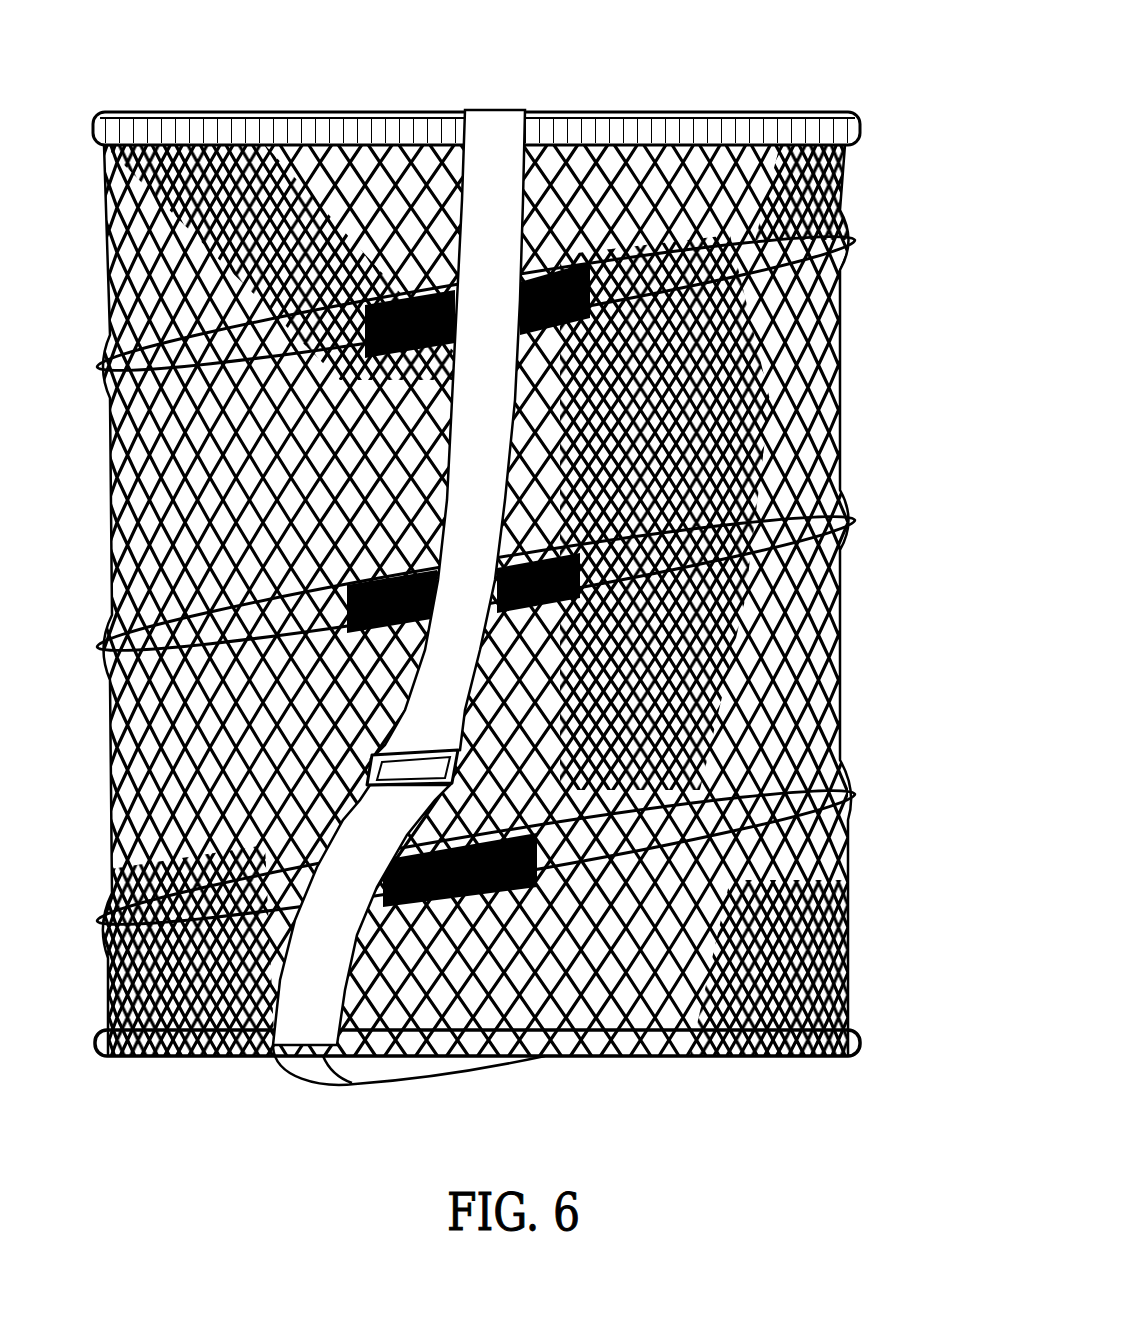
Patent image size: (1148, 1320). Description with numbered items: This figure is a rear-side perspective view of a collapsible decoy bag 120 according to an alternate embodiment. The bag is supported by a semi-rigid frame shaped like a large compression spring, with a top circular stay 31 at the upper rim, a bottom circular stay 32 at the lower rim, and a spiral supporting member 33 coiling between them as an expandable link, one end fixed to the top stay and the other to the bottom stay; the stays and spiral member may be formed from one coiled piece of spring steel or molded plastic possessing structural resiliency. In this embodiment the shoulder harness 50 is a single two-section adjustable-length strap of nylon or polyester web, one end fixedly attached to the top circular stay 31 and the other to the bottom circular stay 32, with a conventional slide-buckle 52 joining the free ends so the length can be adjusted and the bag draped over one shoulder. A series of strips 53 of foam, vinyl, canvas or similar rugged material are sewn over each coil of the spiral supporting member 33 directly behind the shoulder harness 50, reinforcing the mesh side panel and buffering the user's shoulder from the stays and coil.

The collapsible decoy bag 120 is at (212, 58).
The top circular stay 31 is at (857, 116).
The bottom circular stay 32 is at (860, 1033).
The spiral supporting member 33 is at (856, 512).
The strips 53 is at (588, 110).
The slide-buckle 52 is at (366, 768).
The shoulder harness 50 is at (447, 1072).